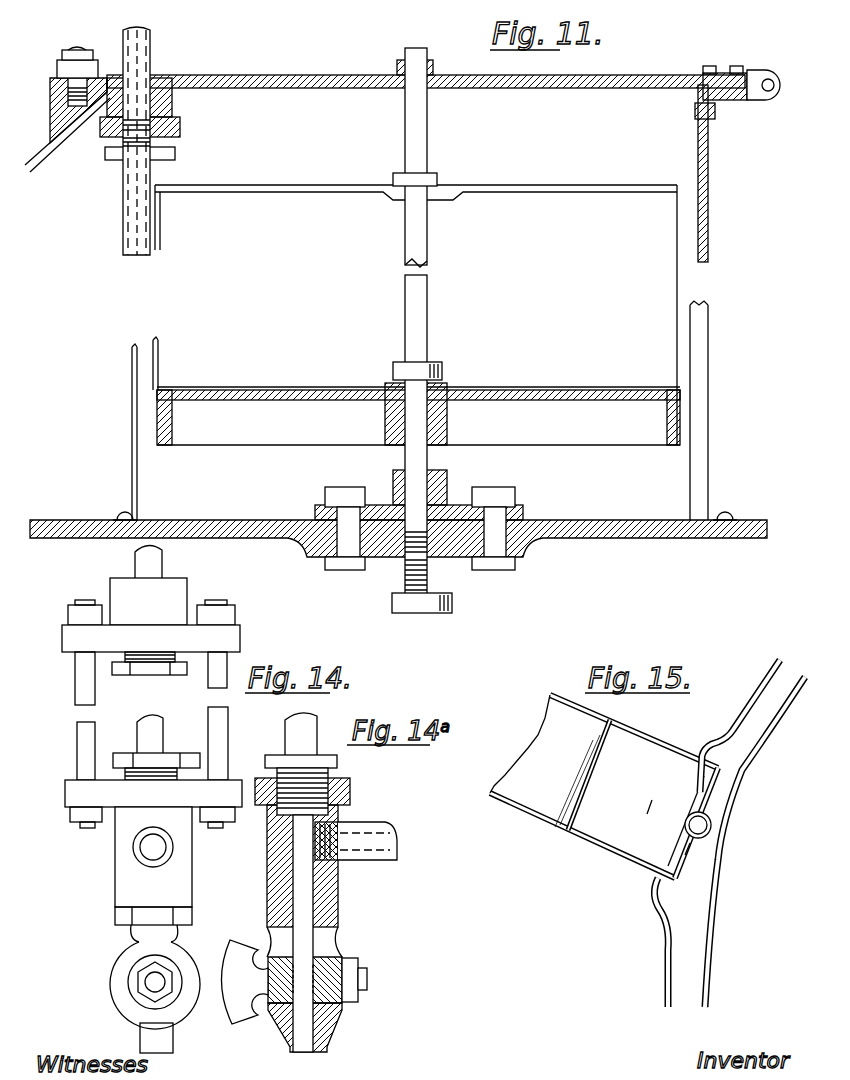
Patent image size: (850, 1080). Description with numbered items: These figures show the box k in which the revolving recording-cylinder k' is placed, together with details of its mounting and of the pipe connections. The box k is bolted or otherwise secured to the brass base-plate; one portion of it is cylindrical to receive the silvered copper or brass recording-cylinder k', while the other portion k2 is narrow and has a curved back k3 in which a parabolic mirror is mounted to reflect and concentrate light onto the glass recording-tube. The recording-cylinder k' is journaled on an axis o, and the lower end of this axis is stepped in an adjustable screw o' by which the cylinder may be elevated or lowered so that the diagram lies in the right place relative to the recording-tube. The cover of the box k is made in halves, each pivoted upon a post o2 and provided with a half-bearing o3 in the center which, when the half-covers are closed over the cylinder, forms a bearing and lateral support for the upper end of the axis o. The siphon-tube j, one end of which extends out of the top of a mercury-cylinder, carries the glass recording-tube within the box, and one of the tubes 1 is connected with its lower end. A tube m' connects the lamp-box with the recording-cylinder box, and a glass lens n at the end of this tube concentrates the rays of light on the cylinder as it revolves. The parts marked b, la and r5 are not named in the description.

In FIG. 11, the box k is at (443, 81).
In FIG. 15, the box k is at (740, 726).
In FIG. 11, the revolving cylinder k' is at (420, 302).
In FIG. 15, the revolving cylinder k' is at (729, 842).
In FIG. 15, the narrow portion of box k2 is at (604, 786).
In FIG. 11, the curved back k3 is at (54, 122).
In FIG. 11, the bar b is at (67, 137).
In FIG. 11, the axis o is at (421, 321).
In FIG. 11, the adjustable screw o' is at (430, 591).
In FIG. 11, the post o2 is at (66, 92).
In FIG. 11, the half-bearing o3 is at (96, 76).
In FIG. 11, the pipe la is at (150, 176).
In FIG. 14, the pipe la is at (165, 727).
In FIG. 14A, the pipe la is at (318, 718).
In FIG. 15, the pipe la is at (711, 830).
In FIG. 14, the siphon-tube j is at (163, 563).
In FIG. 14, the tube 1 is at (168, 848).
In FIG. 14A, the tube 1 is at (377, 834).
In FIG. 15, the glass lens n is at (661, 823).
In FIG. 15, the tube m' is at (580, 790).
In FIG. 15, the screw r5 is at (732, 852).